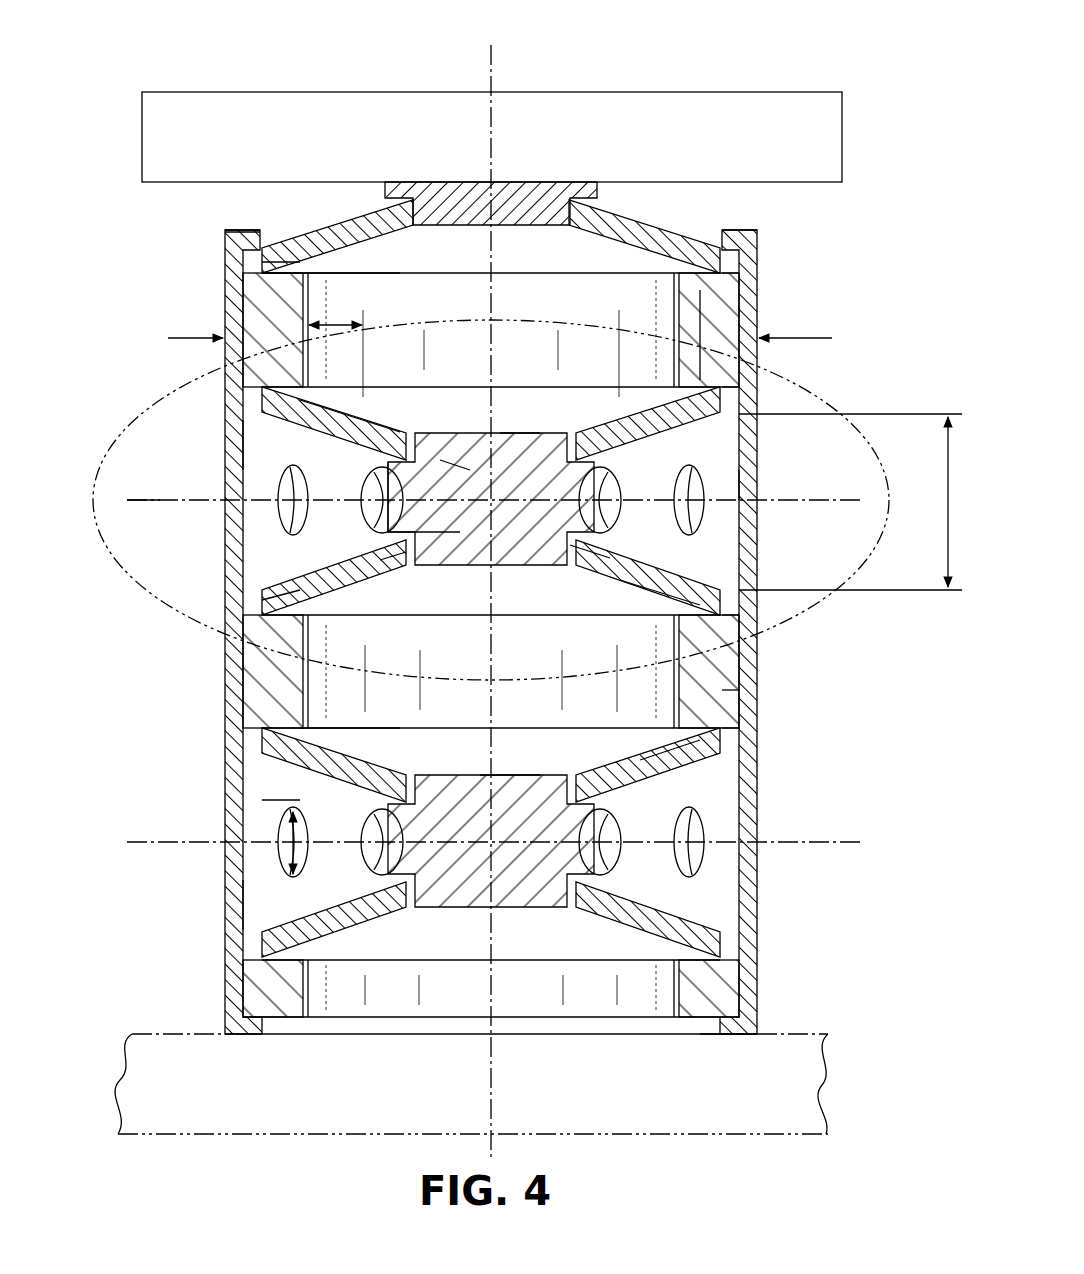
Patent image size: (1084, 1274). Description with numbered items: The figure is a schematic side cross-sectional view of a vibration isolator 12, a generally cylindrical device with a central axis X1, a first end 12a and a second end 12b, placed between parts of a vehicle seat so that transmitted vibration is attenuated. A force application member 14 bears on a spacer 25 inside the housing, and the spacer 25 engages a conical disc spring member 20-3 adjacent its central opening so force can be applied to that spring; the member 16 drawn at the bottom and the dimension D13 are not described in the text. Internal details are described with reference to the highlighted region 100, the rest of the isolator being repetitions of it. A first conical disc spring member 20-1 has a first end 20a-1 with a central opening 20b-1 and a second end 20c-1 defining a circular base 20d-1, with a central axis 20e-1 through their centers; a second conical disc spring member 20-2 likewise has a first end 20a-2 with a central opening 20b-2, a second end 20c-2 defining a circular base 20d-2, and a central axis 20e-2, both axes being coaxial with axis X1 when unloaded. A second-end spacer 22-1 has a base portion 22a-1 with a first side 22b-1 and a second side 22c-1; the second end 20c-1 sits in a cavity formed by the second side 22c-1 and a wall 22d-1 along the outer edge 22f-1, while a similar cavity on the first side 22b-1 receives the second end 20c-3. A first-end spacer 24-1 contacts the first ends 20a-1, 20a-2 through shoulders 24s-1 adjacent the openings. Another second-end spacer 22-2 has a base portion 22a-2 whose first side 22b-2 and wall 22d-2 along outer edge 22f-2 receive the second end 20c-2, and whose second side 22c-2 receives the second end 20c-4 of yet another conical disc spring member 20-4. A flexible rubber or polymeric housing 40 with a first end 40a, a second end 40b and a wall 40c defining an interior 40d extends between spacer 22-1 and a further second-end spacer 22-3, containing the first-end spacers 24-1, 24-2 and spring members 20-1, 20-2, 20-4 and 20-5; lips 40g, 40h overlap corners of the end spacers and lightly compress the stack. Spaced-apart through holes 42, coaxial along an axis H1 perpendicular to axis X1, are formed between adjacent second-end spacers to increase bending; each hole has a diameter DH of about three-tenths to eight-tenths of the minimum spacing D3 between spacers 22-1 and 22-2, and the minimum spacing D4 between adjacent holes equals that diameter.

The vibration isolator 12 is at (502, 595).
The first end 12a is at (228, 252).
The second end 12b is at (240, 1000).
The force application member 14 is at (643, 135).
The lower plate 16 is at (160, 1050).
The first conical disc spring member 20-1 is at (740, 425).
The second conical disc spring member 20-2 is at (716, 612).
The conical disc spring member 20-3 is at (663, 245).
The conical disc spring member 20-4 is at (293, 838).
The conical disc spring member 20-5 is at (690, 915).
The first end 20a-1 is at (397, 535).
The first end 20a-2 is at (400, 578).
The central opening 20b-1 is at (582, 475).
The central opening 20b-2 is at (440, 550).
The second end 20c-1 is at (393, 487).
The second end 20c-2 is at (740, 722).
The second end 20c-3 is at (262, 262).
The second end 20c-4 is at (680, 762).
The circular base 20d-1 is at (395, 457).
The circular base 20d-2 is at (505, 740).
The central axis 20e-1 is at (529, 433).
The central axis 20e-2 is at (600, 566).
The second-end spacer 22-1 is at (358, 287).
The other second-end spacer 22-2 is at (262, 710).
The second-end spacer 22-3 is at (612, 990).
The base portion 22a-1 is at (707, 320).
The base portion 22a-2 is at (345, 735).
The first side 22b-1 is at (390, 272).
The first side 22b-2 is at (640, 585).
The second side 22c-1 is at (440, 542).
The second side 22c-2 is at (294, 803).
The wall 22d-1 is at (757, 400).
The wall 22d-2 is at (757, 612).
The outer edge 22f-1 is at (757, 275).
The outer edge 22f-2 is at (757, 690).
The first-end spacer 24-1 is at (345, 738).
The first-end spacer 24-2 is at (528, 872).
The shoulder 24s-1 is at (740, 525).
The spacer 25 is at (527, 197).
The flexible housing 40 is at (760, 290).
The first end 40a is at (757, 240).
The second end 40b is at (757, 1003).
The wall 40c is at (757, 487).
The interior 40d is at (262, 445).
The lip 40g is at (240, 232).
The lip 40h is at (740, 1036).
The through holes 42 is at (688, 468).
The highlighted region 100 is at (882, 555).
The minimum spacing D3 is at (850, 502).
The minimum spacing between adjacent through holes D4 is at (337, 320).
The dimension D13 is at (471, 357).
The diameter DH is at (270, 893).
The axis H1 is at (138, 510).
The central axis X1 is at (491, 58).